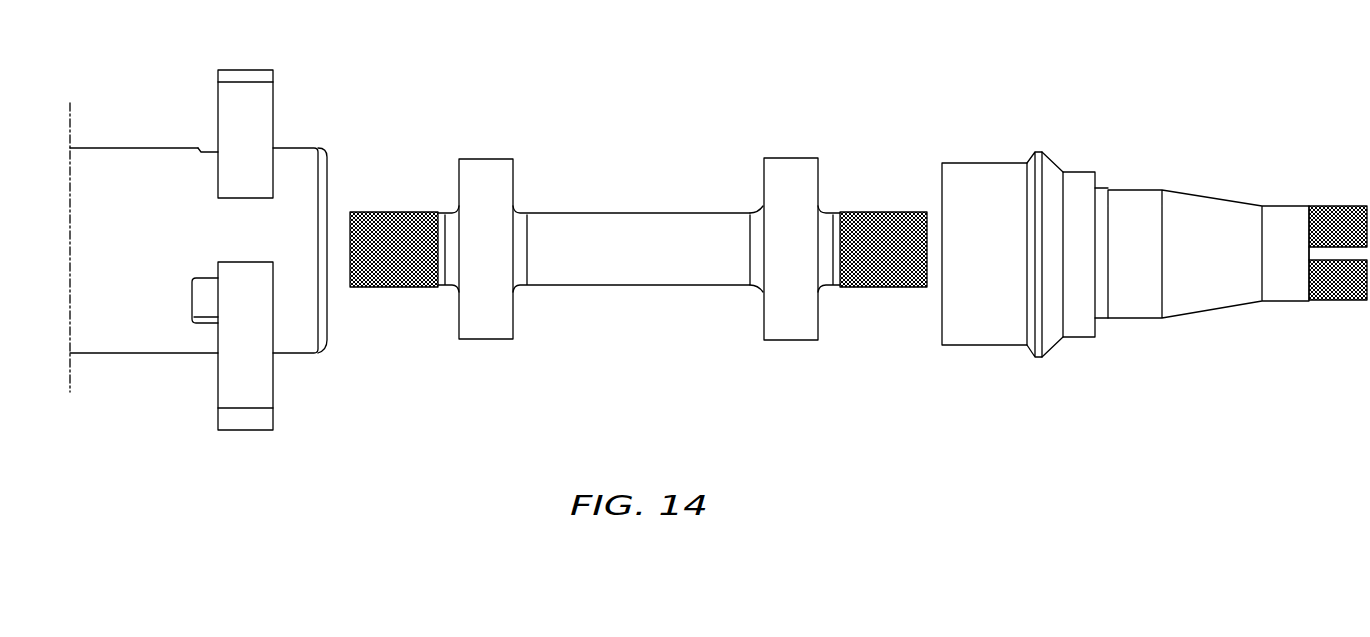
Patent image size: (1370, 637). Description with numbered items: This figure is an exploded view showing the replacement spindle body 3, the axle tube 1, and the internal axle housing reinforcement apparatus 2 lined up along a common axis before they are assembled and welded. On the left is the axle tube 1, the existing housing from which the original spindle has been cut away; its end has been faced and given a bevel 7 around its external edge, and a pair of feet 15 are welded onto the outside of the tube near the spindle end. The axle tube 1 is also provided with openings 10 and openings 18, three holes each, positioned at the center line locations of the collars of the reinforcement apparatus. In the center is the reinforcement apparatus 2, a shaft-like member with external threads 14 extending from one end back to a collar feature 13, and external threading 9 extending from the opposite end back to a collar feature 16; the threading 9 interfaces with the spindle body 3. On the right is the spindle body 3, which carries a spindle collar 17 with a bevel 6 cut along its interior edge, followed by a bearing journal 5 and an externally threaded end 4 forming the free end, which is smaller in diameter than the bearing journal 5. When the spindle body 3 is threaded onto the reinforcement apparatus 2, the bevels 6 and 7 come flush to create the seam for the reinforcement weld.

The axle tube 1 is at (127, 147).
The internal axle housing reinforcement apparatus 2 is at (620, 165).
The spindle body 3 is at (1082, 191).
The externally threaded end 4 is at (1338, 206).
The bearing journal 5 is at (1147, 200).
The bevel 6 is at (1030, 163).
The bevel 7 is at (321, 152).
The external threading 9 is at (885, 212).
The openings 10 is at (207, 149).
The collar feature 13 is at (490, 159).
The external threads 14 is at (393, 212).
The feet 15 is at (250, 70).
The collar feature 16 is at (795, 158).
The spindle collar 17 is at (1047, 158).
The openings 18 is at (208, 308).